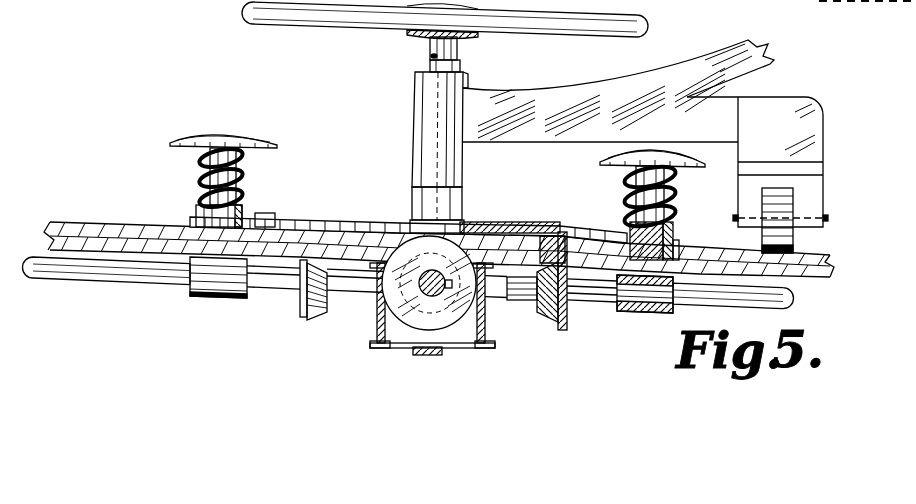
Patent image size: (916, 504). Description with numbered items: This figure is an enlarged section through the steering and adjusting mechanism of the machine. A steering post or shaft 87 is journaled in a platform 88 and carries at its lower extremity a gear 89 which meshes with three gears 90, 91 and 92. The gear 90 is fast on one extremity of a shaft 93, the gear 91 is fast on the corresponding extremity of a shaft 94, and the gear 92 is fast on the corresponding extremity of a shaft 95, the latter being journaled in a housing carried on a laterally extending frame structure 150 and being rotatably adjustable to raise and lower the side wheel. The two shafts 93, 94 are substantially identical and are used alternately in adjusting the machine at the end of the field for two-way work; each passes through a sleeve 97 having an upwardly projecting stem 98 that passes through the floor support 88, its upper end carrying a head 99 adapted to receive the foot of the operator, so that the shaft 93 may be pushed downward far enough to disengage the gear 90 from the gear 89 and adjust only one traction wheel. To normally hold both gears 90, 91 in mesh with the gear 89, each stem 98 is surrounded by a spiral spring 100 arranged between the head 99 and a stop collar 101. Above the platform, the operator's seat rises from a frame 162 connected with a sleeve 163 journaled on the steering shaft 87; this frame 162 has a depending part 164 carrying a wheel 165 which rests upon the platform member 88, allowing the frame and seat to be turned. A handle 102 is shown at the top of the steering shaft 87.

The steering post or shaft 87 is at (459, 50).
The platform 88 is at (358, 226).
The gear 89 is at (488, 228).
The gear 90 is at (567, 321).
The gear 91 is at (300, 308).
The gear 92 is at (497, 345).
The shaft 93 is at (787, 298).
The shaft 94 is at (145, 282).
The shaft 95 is at (398, 304).
The sleeve 97 is at (213, 299).
The stem 98 is at (677, 252).
The head 99 is at (252, 137).
The spiral spring 100 is at (243, 175).
The stop collar 101 is at (243, 209).
The handle 102 is at (290, 21).
The frame structure 150 is at (375, 327).
The frame 162 is at (550, 103).
The sleeve 163 is at (440, 108).
The depending part 164 is at (805, 192).
The wheel 165 is at (795, 243).